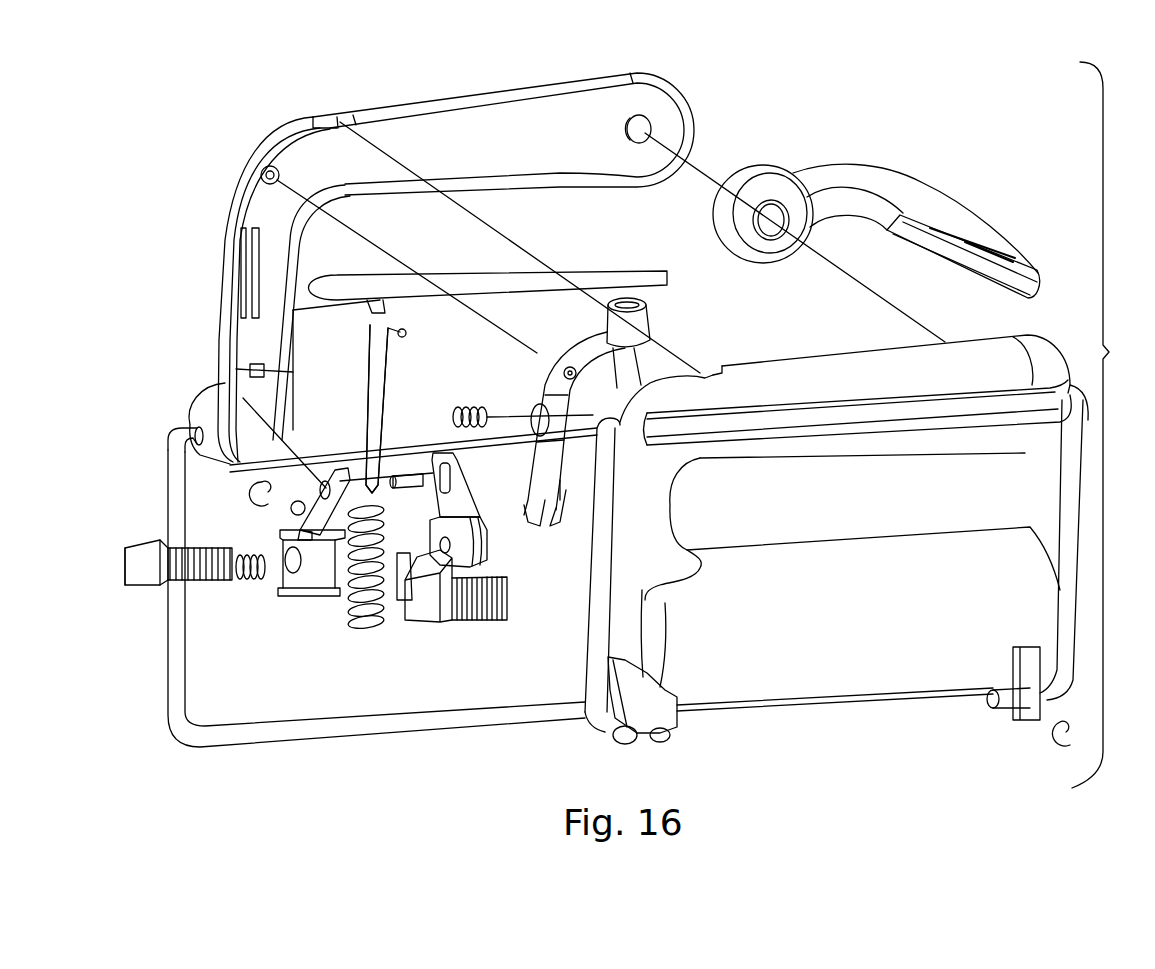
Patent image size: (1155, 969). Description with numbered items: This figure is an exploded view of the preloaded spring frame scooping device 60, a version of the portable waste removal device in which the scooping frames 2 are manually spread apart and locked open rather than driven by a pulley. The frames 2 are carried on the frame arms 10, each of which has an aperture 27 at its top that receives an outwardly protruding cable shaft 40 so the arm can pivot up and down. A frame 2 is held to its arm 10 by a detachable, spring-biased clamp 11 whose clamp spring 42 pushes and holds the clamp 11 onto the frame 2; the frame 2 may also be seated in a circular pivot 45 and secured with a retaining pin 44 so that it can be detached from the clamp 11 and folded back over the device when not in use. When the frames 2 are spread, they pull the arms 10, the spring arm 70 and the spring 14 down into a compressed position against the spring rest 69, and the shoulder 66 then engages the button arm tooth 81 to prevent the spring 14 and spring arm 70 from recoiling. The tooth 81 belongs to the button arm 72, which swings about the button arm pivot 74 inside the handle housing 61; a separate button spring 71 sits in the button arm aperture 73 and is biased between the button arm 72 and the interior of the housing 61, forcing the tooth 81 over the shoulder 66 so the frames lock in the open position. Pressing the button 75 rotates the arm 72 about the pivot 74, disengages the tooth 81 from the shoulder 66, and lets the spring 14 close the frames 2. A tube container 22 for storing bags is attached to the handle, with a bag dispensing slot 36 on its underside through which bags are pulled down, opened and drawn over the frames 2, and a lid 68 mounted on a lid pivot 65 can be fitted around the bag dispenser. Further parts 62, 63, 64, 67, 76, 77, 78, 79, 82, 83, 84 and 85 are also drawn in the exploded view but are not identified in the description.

The scooping frame 2 is at (177, 440).
The frame arm 10 is at (320, 587).
The detachable clamp 11 is at (157, 547).
The spring 14 is at (360, 633).
The tube container 22 is at (917, 672).
The aperture 27 is at (320, 487).
The bag dispensing slot 36 is at (803, 703).
The cable shaft 40 is at (408, 481).
The clamp spring 42 is at (250, 552).
The retaining pin 44 is at (1057, 737).
The circular pivot 45 is at (440, 540).
The preloaded spring frame scooping device 60 is at (1106, 425).
The handle housing 61 is at (553, 83).
The housing 62 is at (883, 352).
The pin 63 is at (279, 167).
The rod 64 is at (252, 256).
The lid pivot 65 is at (655, 133).
The shoulder 66 is at (372, 313).
The wheel 67 is at (772, 232).
The lid 68 is at (927, 193).
The spring rest 69 is at (258, 364).
The spring arm 70 is at (375, 372).
The button spring 71 is at (460, 408).
The button arm 72 is at (565, 442).
The button arm aperture 73 is at (531, 408).
The button arm pivot 74 is at (577, 373).
The button 75 is at (647, 310).
The shoulder 76 is at (713, 375).
The rail 77 is at (780, 433).
The pin 78 is at (1033, 728).
The hinge 79 is at (477, 543).
The button arm tooth 81 is at (537, 507).
The slot 82 is at (565, 470).
The notch 83 is at (318, 118).
The hole 84 is at (286, 572).
The flange 85 is at (405, 600).